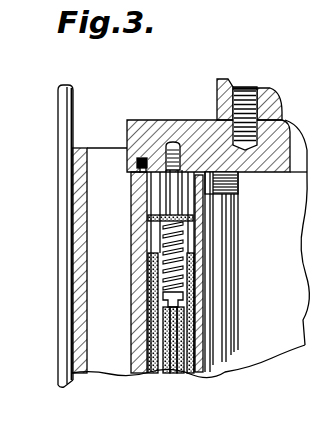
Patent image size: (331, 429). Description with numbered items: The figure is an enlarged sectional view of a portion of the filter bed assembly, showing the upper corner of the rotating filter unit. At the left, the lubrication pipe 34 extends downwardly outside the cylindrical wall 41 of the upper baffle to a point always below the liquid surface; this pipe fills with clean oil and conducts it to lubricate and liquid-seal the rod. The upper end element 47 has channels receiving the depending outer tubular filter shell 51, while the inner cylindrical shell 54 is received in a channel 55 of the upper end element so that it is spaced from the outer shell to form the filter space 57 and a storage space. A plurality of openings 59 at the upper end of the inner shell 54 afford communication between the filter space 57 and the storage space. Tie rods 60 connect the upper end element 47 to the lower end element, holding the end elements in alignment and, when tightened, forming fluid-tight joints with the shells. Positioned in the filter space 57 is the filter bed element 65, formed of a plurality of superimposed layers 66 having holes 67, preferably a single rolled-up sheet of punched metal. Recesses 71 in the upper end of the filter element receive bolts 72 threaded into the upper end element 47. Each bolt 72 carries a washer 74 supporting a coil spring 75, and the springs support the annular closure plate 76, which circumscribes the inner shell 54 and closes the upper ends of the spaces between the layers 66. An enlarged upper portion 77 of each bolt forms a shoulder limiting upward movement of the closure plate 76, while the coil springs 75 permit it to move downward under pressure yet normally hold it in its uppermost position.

The lubrication pipe 34 is at (68, 112).
The cylindrical wall 41 is at (75, 291).
The upper end element 47 is at (183, 120).
The outer tubular filter shell 51 is at (138, 237).
The inner cylindrical shell 54 is at (226, 372).
The channel 55 is at (202, 120).
The filter space 57 is at (160, 182).
The openings 59 is at (138, 170).
The tie rods 60 is at (230, 228).
The filter bed element 65 is at (182, 322).
The layers 66 is at (178, 337).
The holes 67 is at (180, 356).
The recesses 71 is at (147, 272).
The bolts 72 is at (190, 267).
The washer 74 is at (200, 290).
The coil spring 75 is at (178, 246).
The annular closure plate 76 is at (168, 210).
The enlarged upper portion 77 is at (206, 197).